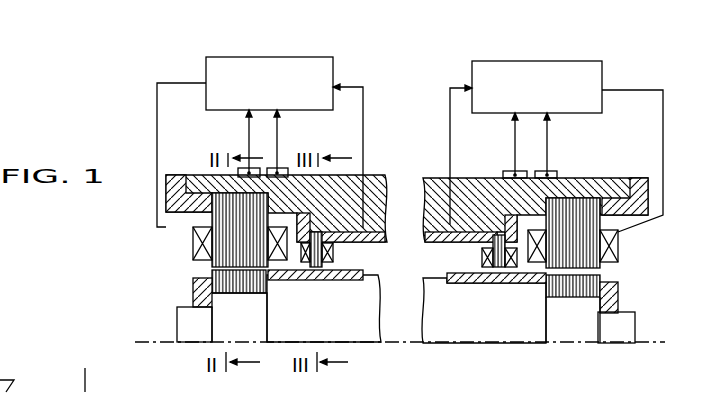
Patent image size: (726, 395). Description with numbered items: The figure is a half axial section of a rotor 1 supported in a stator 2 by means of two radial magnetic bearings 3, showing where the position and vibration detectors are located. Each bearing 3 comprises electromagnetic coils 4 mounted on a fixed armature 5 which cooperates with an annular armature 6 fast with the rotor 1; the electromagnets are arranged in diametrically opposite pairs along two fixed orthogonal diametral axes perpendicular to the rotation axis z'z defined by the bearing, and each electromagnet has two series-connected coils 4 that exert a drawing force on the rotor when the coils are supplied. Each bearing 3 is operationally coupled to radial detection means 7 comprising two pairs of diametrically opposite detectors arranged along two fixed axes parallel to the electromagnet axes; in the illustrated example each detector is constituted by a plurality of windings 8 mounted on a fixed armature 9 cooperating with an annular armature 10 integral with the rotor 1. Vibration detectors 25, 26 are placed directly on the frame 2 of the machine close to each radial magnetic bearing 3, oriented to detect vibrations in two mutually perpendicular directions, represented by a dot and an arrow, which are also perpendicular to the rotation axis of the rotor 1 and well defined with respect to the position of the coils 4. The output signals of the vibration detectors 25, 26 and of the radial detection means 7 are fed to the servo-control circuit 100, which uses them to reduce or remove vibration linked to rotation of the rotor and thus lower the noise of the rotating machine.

The rotor 1 is at (372, 330).
The stator 2 is at (477, 190).
The radial magnetic bearing 3 is at (193, 268).
The electromagnetic coil 4 is at (193, 245).
The fixed armature 5 is at (235, 218).
The annular armature 6 is at (220, 284).
The radial detection means 7 is at (467, 266).
The windings 8 is at (333, 257).
The fixed armature 9 is at (308, 270).
The annular armature 10 is at (358, 275).
The vibration detector 25 is at (262, 167).
The vibration detector 26 is at (286, 167).
The servo-control circuit 100 is at (334, 63).